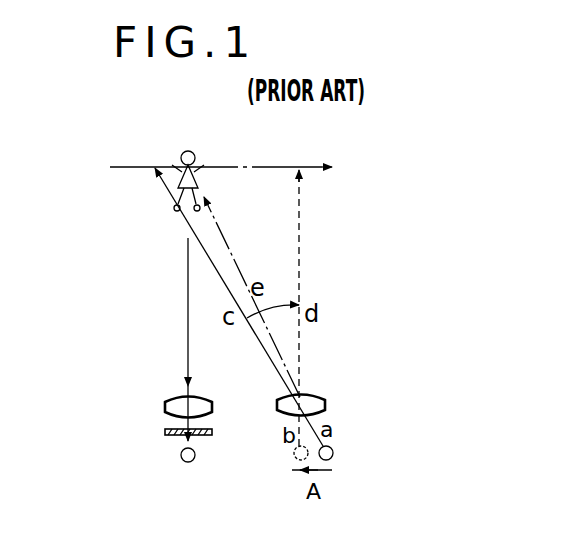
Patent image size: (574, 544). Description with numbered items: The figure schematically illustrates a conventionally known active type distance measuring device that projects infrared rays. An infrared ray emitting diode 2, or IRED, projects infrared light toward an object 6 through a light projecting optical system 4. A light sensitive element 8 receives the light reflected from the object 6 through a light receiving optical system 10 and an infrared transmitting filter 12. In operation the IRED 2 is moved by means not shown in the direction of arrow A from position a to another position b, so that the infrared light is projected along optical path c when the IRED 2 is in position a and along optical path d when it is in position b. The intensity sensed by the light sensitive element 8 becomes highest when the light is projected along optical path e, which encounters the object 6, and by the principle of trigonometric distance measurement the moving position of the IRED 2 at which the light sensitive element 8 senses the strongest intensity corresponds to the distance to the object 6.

The infrared ray emitting diode 2 is at (334, 453).
The light projecting optical system 4 is at (325, 400).
The object 6 is at (196, 153).
The light sensitive element 8 is at (184, 462).
The light receiving optical system 10 is at (165, 408).
The infrared transmitting filter 12 is at (165, 433).